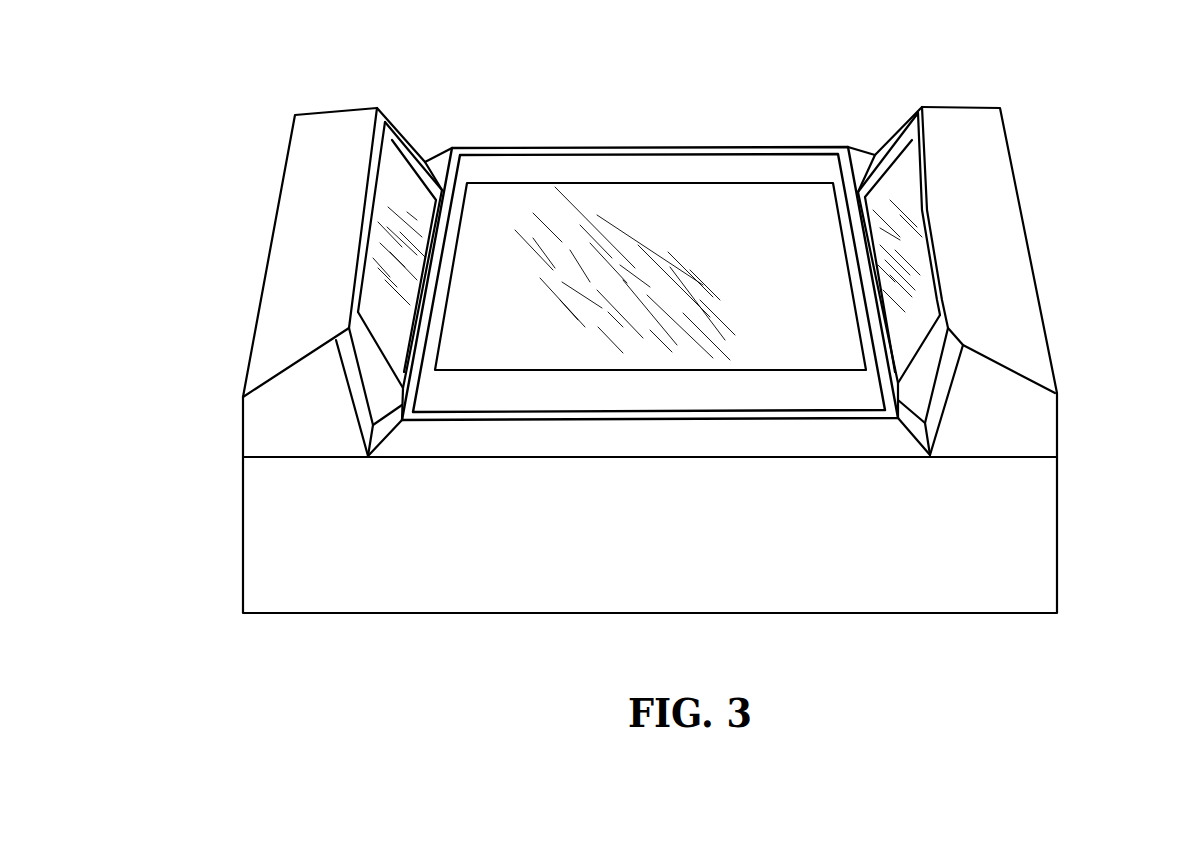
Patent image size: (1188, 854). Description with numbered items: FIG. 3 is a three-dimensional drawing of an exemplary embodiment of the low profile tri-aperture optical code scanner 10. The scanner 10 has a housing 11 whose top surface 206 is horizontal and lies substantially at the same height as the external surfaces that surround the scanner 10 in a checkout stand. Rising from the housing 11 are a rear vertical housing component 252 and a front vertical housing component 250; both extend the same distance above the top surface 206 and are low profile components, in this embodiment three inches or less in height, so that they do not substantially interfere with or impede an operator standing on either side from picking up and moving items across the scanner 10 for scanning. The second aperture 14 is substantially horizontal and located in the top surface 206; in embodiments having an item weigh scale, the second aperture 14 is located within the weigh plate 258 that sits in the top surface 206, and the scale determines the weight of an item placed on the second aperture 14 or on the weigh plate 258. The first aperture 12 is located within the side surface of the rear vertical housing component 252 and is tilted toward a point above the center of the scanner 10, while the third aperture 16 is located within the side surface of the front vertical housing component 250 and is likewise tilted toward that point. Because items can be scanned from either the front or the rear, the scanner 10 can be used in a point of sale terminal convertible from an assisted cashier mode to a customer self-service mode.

The low profile tri-aperture optical code scanner 10 is at (873, 57).
The housing 11 is at (398, 613).
The first aperture 12 is at (372, 284).
The second aperture 14 is at (627, 228).
The third aperture 16 is at (900, 240).
The top surface 206 is at (513, 150).
The front vertical housing component 250 is at (1008, 418).
The rear vertical housing component 252 is at (315, 172).
The weigh plate 258 is at (710, 168).